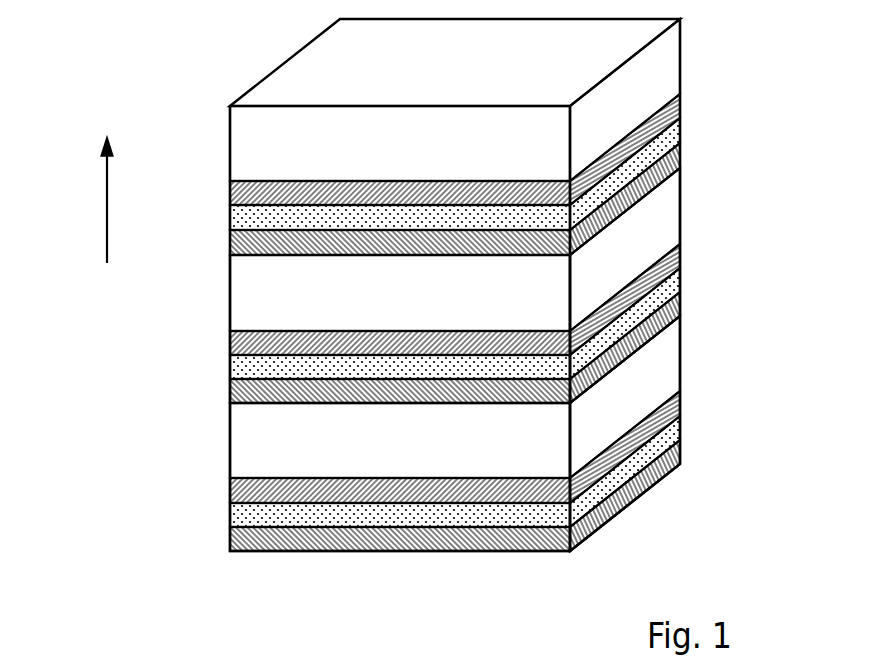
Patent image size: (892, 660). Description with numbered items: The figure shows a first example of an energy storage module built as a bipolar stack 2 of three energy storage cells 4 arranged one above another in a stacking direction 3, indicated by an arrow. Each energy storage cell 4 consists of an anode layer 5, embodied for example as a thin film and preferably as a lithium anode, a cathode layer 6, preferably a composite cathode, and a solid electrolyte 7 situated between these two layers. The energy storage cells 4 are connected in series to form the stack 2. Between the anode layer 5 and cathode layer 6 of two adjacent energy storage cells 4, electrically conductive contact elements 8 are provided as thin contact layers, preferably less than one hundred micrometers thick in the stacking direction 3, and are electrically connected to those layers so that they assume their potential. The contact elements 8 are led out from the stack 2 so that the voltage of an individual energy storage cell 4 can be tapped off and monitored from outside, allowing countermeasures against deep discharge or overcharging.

The bipolar stack 2 is at (204, 574).
The stacking direction 3 is at (107, 200).
The energy storage cell 4 is at (222, 256).
The anode layer 5 is at (673, 283).
The cathode layer 6 is at (673, 218).
The solid electrolyte 7 is at (673, 259).
The contact element 8 is at (673, 310).